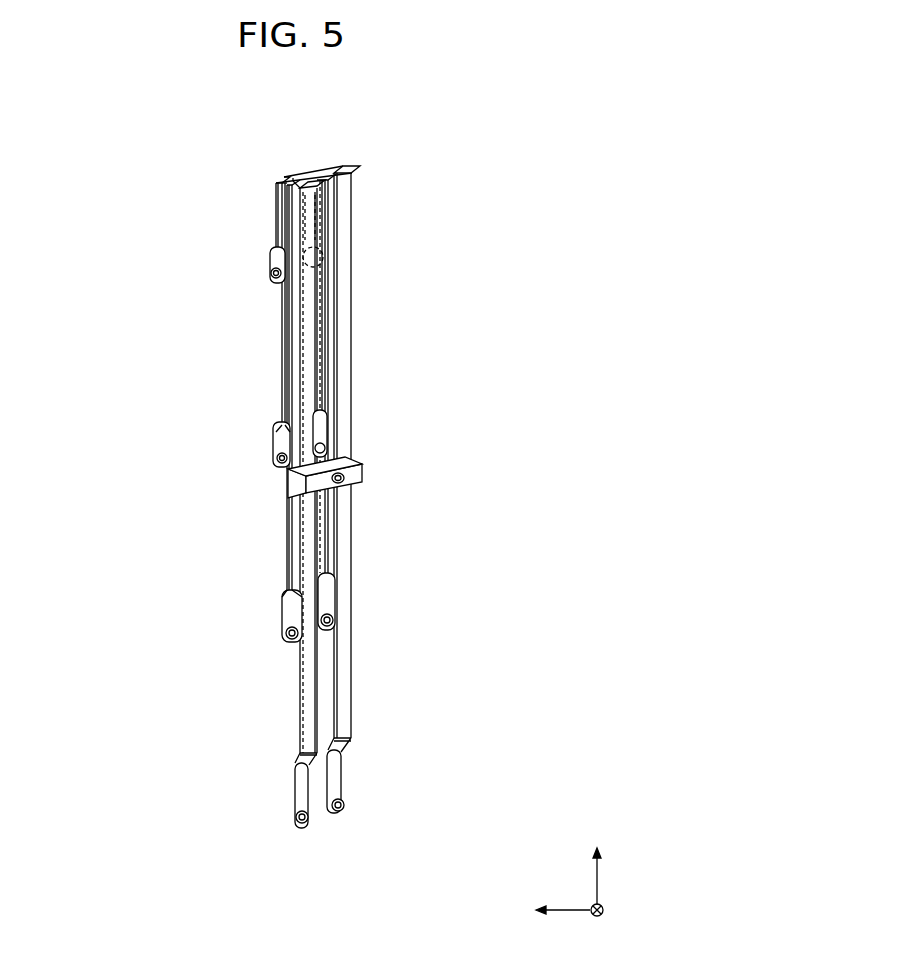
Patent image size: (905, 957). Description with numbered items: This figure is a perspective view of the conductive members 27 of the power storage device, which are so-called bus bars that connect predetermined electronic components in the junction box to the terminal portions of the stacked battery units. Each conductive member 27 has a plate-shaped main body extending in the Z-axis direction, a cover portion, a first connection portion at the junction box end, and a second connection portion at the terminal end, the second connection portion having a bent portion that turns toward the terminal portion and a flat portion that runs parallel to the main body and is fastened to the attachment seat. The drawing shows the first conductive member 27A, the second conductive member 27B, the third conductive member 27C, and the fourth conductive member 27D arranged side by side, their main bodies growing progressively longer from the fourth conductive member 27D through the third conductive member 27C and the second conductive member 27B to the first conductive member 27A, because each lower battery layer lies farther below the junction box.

The conductive member 27 is at (385, 155).
The first conductive member 27A is at (438, 690).
The second conductive member 27B is at (330, 555).
The third conductive member 27C is at (323, 440).
The fourth conductive member 27D is at (307, 246).